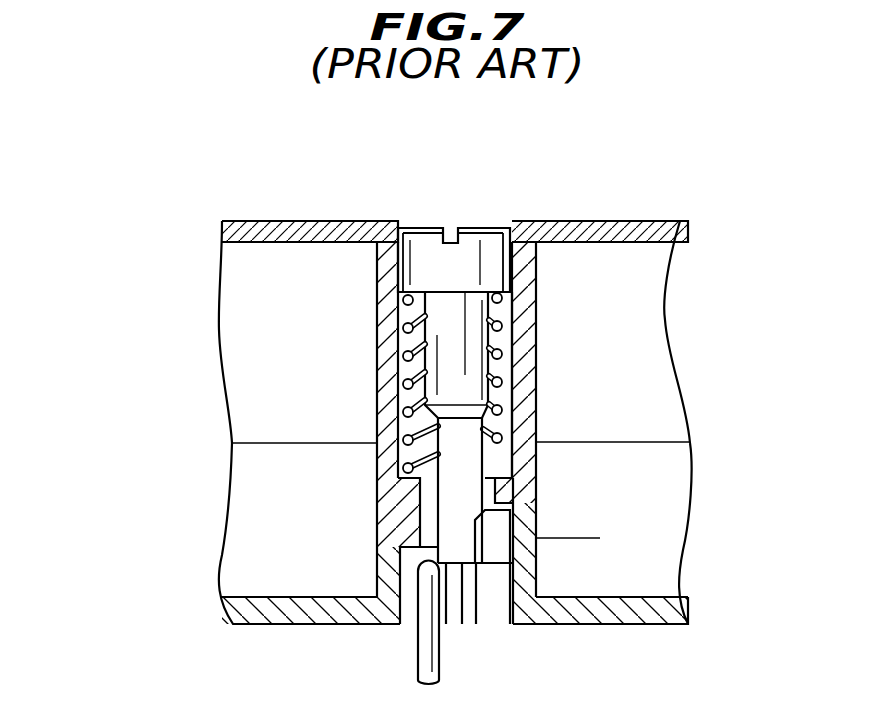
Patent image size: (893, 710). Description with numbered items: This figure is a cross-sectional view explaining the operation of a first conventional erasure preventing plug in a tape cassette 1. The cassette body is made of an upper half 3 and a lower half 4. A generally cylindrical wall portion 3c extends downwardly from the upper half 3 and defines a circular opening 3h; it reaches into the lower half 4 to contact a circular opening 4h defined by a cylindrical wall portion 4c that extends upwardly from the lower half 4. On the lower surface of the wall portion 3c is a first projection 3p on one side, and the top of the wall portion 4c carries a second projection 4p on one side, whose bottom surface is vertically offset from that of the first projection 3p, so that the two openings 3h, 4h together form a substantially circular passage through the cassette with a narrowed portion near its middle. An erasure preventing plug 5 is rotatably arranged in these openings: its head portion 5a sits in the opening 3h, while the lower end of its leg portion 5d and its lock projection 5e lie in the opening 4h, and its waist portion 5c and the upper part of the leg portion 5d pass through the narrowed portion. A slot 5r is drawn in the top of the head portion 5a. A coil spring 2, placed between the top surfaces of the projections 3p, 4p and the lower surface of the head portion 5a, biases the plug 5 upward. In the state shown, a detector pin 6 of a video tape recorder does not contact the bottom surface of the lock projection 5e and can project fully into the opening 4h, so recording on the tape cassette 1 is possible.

The tape cassette 1 is at (203, 313).
The coil spring 2 is at (502, 382).
The upper half 3 is at (317, 228).
The cylindrical wall portion 3c is at (376, 357).
The circular opening 3h is at (522, 440).
The first projection 3p is at (420, 543).
The lower half 4 is at (300, 612).
The cylindrical wall portion 4c is at (600, 538).
The circular opening 4h is at (502, 607).
The second projection 4p is at (503, 495).
The erasure preventing plug 5 is at (410, 223).
The head portion 5a is at (490, 243).
The waist portion 5c is at (470, 317).
The leg portion 5d is at (462, 628).
The lock projection 5e is at (505, 553).
The slot of valve member 5r is at (452, 233).
The detector pin 6 is at (428, 642).